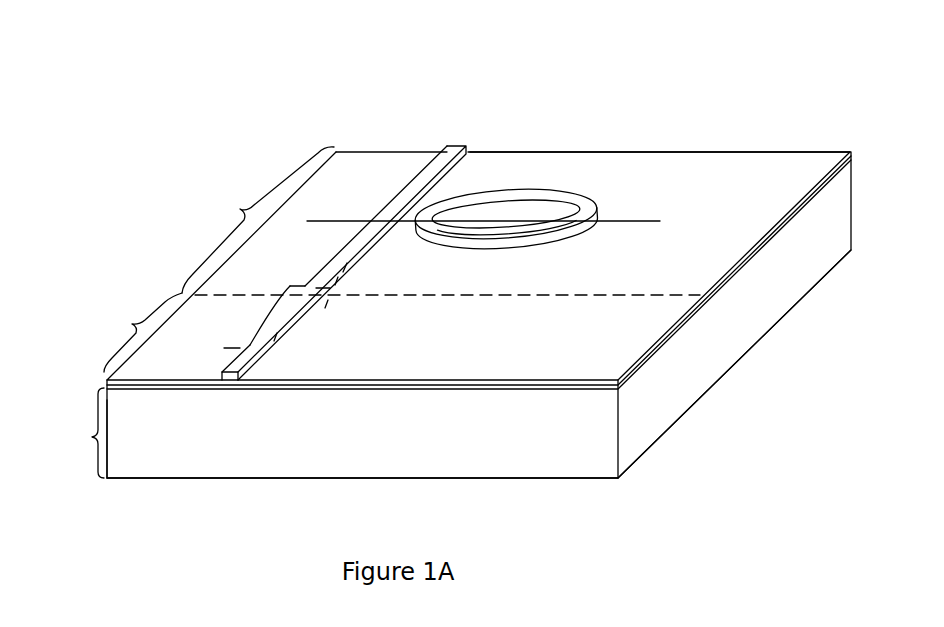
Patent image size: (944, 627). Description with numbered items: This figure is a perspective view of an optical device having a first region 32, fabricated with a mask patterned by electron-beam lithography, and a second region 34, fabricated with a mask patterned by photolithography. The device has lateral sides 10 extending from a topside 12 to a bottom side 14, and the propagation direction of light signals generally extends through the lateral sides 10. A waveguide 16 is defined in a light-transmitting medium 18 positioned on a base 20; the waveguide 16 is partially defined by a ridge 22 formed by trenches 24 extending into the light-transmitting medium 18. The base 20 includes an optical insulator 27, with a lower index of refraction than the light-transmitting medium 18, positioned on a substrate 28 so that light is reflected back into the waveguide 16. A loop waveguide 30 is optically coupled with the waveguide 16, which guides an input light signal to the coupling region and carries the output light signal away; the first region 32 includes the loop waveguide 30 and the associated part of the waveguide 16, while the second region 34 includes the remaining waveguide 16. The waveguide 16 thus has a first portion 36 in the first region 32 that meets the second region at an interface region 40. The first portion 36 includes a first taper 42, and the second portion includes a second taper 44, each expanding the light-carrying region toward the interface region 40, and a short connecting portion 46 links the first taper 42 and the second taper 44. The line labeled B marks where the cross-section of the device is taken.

The lateral sides 10 is at (705, 372).
The topside 12 is at (718, 163).
The bottom side 14 is at (595, 482).
The waveguide 16 is at (372, 189).
The light-transmitting medium 18 is at (107, 380).
The base 20 is at (86, 433).
The ridge 22 is at (441, 139).
The trenches 24 is at (240, 348).
The optical insulator 27 is at (160, 387).
The substrate 28 is at (137, 465).
The loop waveguide 30 is at (597, 180).
The first region 32 is at (241, 208).
The second region 34 is at (133, 324).
The first portion 36 is at (357, 237).
The interface region 40 is at (306, 286).
The first taper 42 is at (348, 272).
The second taper 44 is at (292, 317).
The connecting portion 46 is at (288, 284).
The line B is at (627, 220).